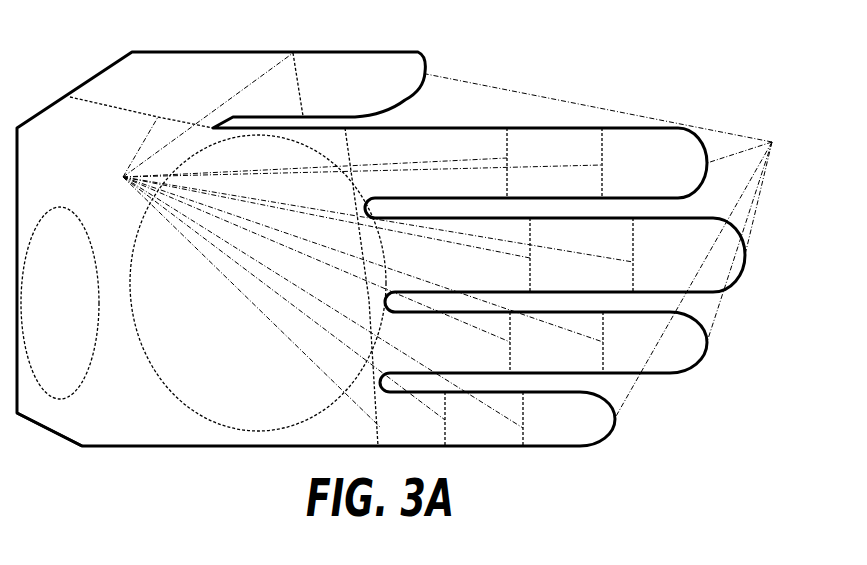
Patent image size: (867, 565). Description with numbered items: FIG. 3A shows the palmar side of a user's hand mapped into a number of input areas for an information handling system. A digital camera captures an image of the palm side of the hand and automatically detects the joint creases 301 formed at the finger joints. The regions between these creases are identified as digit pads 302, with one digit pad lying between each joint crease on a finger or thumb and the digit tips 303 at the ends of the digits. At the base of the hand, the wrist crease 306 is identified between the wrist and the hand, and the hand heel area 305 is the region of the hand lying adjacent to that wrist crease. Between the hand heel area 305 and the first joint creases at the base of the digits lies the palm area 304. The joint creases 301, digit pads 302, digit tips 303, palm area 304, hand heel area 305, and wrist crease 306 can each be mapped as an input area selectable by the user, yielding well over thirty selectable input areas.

The joint creases 301 is at (122, 177).
The digit pads 302 is at (391, 438).
The digit tips 303 is at (772, 142).
The palm area 304 is at (189, 353).
The hand heel area 305 is at (41, 343).
The wrist crease 306 is at (18, 388).